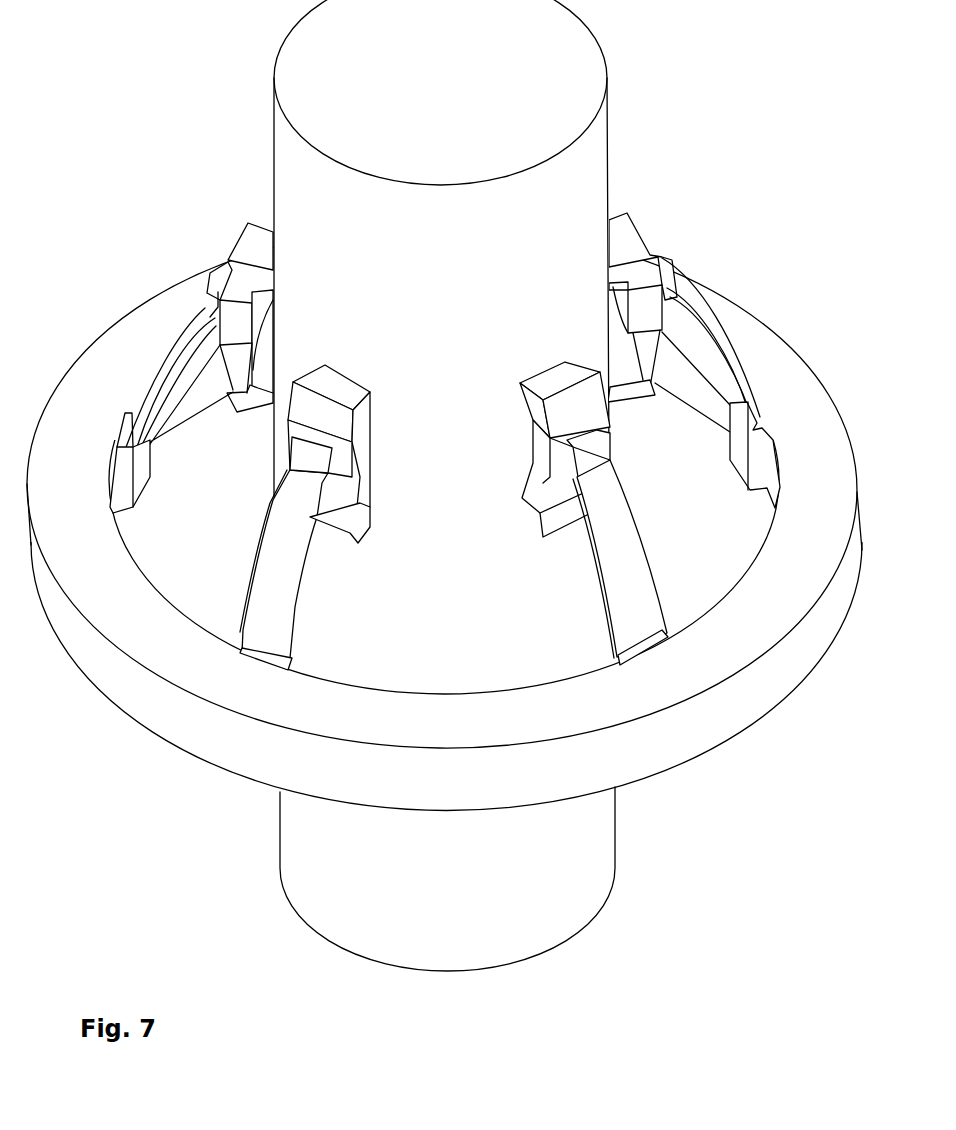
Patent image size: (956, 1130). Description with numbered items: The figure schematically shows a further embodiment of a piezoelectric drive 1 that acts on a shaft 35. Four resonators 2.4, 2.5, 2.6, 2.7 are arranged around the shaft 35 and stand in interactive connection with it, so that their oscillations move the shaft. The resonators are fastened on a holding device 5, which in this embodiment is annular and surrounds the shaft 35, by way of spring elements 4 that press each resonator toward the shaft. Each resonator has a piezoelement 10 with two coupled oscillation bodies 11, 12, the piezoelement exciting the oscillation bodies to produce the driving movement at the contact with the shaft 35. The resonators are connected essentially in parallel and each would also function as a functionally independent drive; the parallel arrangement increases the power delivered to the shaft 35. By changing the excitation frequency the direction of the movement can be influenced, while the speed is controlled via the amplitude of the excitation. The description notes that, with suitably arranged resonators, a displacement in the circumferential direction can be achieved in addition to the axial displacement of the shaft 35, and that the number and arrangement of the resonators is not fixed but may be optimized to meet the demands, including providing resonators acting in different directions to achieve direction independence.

The drive 1 is at (443, 485).
The shaft 35 is at (560, 197).
The oscillation body 12 is at (650, 267).
The piezoelement 10 is at (650, 310).
The oscillation body 11 is at (640, 353).
The resonator 2.4 is at (300, 307).
The resonator 2.5 is at (361, 365).
The resonator 2.6 is at (531, 364).
The resonator 2.7 is at (661, 299).
The spring element 4 is at (627, 567).
The holding device 5 is at (693, 722).